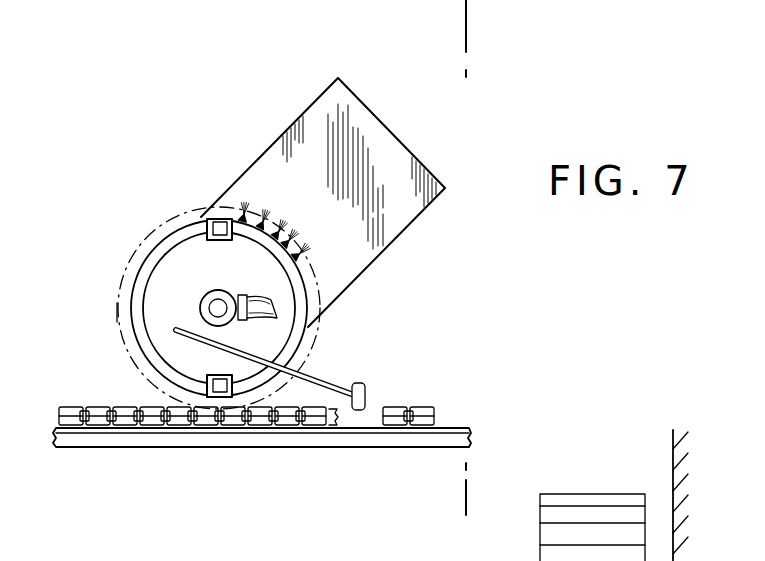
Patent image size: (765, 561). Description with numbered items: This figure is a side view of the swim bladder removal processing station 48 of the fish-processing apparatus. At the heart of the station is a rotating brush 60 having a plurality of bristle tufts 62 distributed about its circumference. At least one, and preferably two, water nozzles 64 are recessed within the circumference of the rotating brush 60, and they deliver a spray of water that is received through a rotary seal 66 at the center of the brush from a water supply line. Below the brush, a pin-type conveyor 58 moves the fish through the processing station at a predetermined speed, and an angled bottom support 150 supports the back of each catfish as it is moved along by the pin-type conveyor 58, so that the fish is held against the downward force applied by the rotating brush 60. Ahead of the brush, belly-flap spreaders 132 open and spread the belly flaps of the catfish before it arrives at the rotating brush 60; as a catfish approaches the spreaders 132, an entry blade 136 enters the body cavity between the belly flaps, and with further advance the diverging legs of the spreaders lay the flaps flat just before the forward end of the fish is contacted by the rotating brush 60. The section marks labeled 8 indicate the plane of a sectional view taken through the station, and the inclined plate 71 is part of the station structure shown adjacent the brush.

The section line 8- 8 is at (466, 23).
The swim bladder removal processing station 48 is at (124, 213).
The pin-type conveyor 58 is at (76, 404).
The rotating brush 60 is at (148, 316).
The bristle tufts 62 is at (283, 257).
The water nozzles 64 is at (223, 221).
The rotary seal 66 is at (206, 299).
The plate 71 is at (420, 170).
The belly-flap spreaders 132 is at (373, 335).
The entry blades 136 is at (365, 383).
The angled bottom support 150 is at (256, 448).